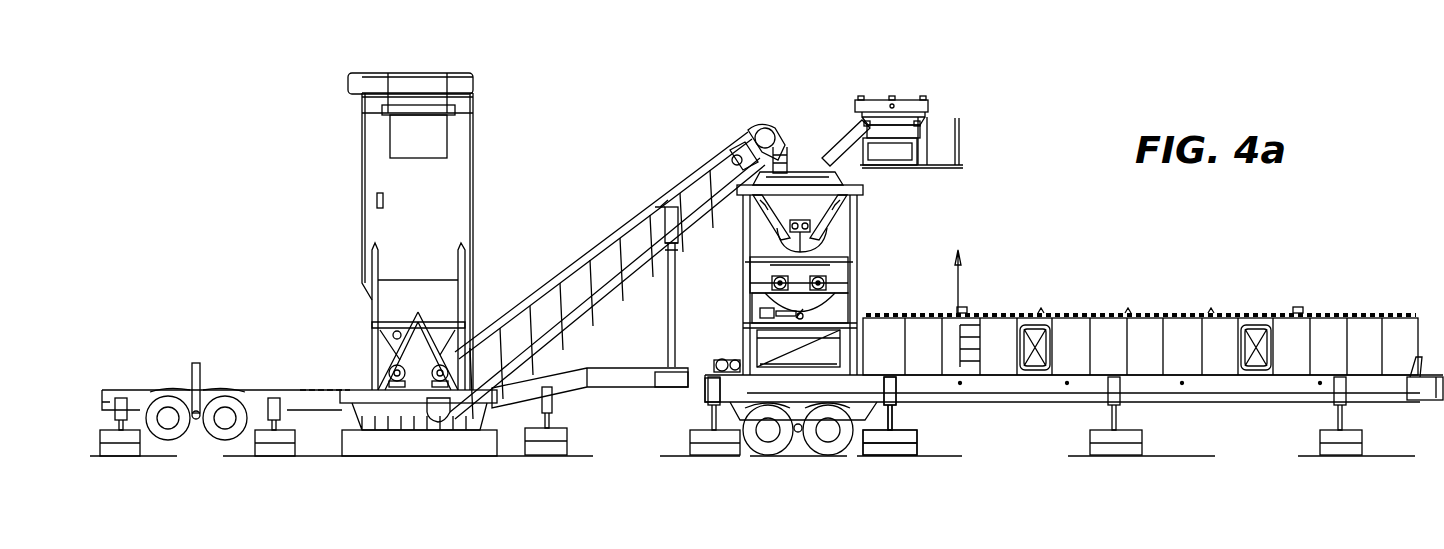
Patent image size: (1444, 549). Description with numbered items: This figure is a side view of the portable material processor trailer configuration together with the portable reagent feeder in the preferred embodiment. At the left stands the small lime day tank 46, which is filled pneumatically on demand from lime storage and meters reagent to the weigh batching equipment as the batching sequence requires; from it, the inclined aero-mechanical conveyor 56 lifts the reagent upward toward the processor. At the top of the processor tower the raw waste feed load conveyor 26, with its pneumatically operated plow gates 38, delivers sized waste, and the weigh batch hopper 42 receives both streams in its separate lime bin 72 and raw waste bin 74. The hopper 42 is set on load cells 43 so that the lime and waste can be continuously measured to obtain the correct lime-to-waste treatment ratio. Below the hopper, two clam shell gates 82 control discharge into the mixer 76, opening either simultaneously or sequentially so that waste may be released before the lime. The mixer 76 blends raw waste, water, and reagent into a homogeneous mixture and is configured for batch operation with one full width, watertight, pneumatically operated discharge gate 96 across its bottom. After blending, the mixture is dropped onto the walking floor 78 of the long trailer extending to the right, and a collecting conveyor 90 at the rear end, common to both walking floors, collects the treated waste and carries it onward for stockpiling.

The feed load conveyor 26 is at (900, 127).
The plow gates 38 is at (897, 102).
The weigh batch hopper 42 is at (958, 187).
The load cells 43 is at (747, 148).
The lime day tank 46 is at (467, 142).
The aero-mechanical conveyor 56 is at (575, 282).
The lime bin 72 is at (786, 211).
The raw waste bin 74 is at (857, 192).
The mixer 76 is at (835, 272).
The walking floor 78 is at (1138, 350).
The clam shell gates 82 is at (812, 243).
The collecting conveyor 90 is at (1437, 365).
The discharge gate 96 is at (815, 303).